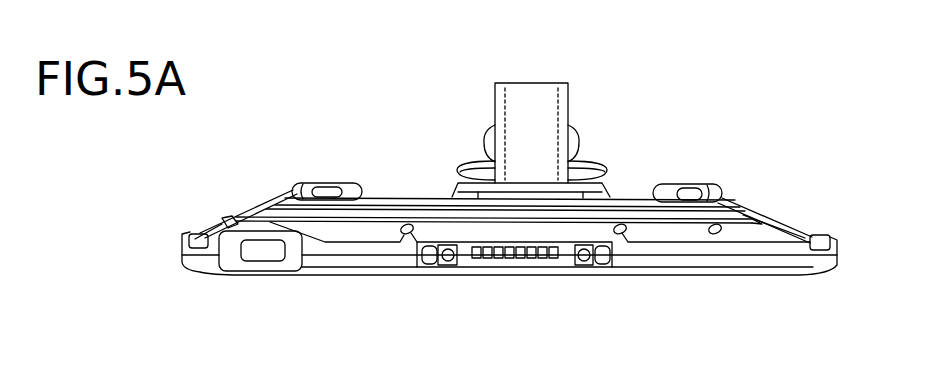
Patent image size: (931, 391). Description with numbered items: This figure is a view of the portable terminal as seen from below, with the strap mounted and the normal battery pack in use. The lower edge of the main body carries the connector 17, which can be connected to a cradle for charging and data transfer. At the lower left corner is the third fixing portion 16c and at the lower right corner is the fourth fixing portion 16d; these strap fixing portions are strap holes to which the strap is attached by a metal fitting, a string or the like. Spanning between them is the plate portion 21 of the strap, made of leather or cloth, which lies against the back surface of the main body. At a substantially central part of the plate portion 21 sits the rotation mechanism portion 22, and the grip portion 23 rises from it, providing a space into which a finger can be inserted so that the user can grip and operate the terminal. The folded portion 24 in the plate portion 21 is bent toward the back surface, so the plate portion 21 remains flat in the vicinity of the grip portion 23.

The third fixing portion 16c is at (192, 233).
The fourth fixing portion 16d is at (822, 234).
The connector 17 is at (515, 270).
The plate portion 21 is at (645, 185).
The rotation mechanism portion 22 is at (450, 190).
The grip portion 23 is at (533, 90).
The folded portion 24 is at (390, 192).